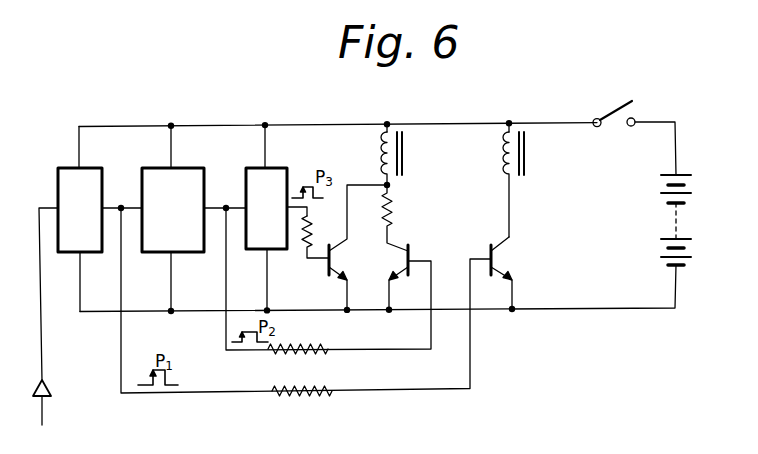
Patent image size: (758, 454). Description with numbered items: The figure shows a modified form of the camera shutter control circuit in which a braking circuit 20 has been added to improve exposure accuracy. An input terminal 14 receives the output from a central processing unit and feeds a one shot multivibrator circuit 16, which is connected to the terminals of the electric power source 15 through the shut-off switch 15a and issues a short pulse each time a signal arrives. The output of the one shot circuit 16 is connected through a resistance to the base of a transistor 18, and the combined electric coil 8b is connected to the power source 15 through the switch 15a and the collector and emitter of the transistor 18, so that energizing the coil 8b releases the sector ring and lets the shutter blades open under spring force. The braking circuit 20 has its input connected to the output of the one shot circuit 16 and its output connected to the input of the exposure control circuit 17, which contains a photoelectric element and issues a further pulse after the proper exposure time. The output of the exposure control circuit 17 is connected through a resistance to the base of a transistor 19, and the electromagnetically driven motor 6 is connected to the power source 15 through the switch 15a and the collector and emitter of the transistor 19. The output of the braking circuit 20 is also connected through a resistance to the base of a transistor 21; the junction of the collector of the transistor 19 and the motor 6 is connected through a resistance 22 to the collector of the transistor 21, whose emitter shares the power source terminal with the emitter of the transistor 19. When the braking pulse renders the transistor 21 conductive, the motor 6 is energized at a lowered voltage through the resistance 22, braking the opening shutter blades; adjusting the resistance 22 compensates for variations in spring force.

The electromagnetically driven motor 6 is at (405, 157).
The combined electric coil 8b is at (531, 160).
The input terminal 14 is at (52, 386).
The electric power source 15 is at (656, 197).
The shut-off switch 15a is at (620, 132).
The one shot multivibrator circuit 16 is at (90, 167).
The exposure control circuit 17 is at (282, 167).
The transistor 18 is at (509, 259).
The transistor 19 is at (339, 261).
The braking circuit 20 is at (187, 167).
The transistor 21 is at (412, 251).
The resistance 22 is at (396, 204).